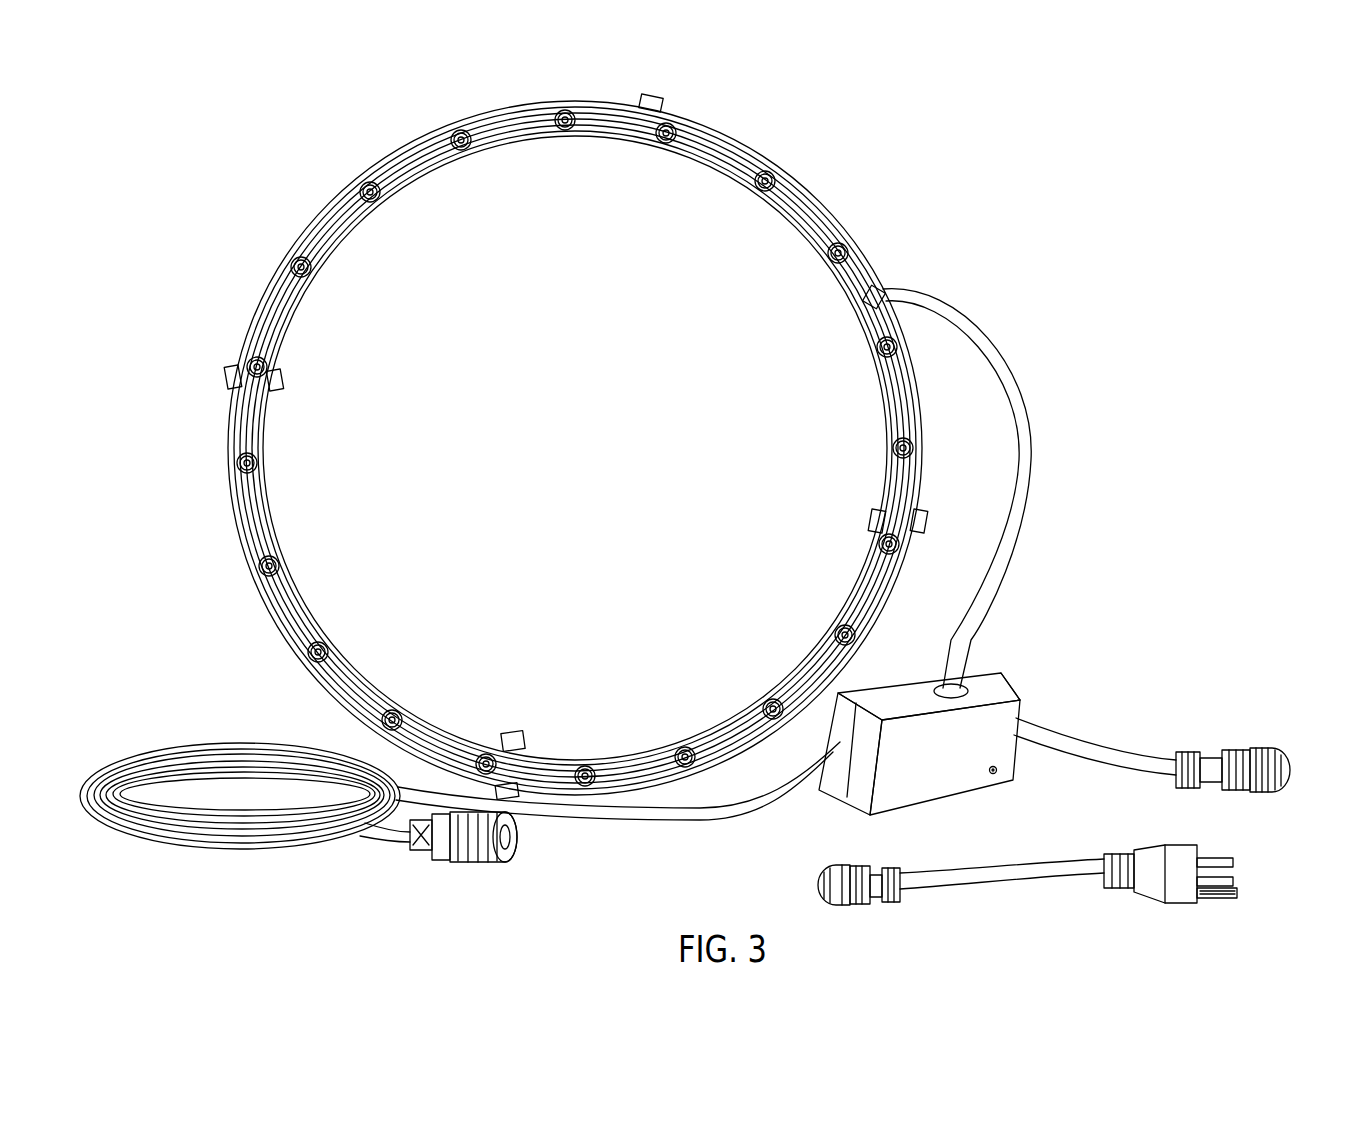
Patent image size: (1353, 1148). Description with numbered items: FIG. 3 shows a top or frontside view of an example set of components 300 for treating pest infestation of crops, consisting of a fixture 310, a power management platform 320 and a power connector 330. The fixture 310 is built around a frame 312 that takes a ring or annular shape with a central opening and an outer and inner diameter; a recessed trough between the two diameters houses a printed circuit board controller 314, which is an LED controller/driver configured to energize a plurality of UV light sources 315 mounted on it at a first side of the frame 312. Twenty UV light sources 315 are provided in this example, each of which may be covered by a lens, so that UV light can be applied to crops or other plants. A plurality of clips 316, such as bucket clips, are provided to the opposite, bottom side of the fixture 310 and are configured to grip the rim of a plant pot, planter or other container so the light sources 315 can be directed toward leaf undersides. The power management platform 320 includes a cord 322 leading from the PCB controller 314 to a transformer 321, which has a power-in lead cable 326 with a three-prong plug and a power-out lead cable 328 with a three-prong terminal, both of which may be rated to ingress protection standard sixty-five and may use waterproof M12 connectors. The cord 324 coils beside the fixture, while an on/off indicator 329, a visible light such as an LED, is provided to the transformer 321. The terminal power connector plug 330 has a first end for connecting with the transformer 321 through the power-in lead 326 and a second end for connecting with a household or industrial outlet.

The set of components 300 is at (1218, 104).
The fixture 310 is at (206, 497).
The frame 312 is at (733, 146).
The printed circuit board controller 314 is at (328, 238).
The UV light sources 315 is at (368, 192).
The clips 316 is at (527, 736).
The power management platform 320 is at (1152, 595).
The transformer 321 is at (1022, 695).
The cord 322 is at (1024, 390).
The coiled power cord 324 is at (265, 747).
The power-in lead cable 326 is at (522, 832).
The power-out lead cable 328 is at (1254, 752).
The on/off indicator 329 is at (1014, 769).
The terminal power connector plug 330 is at (792, 881).